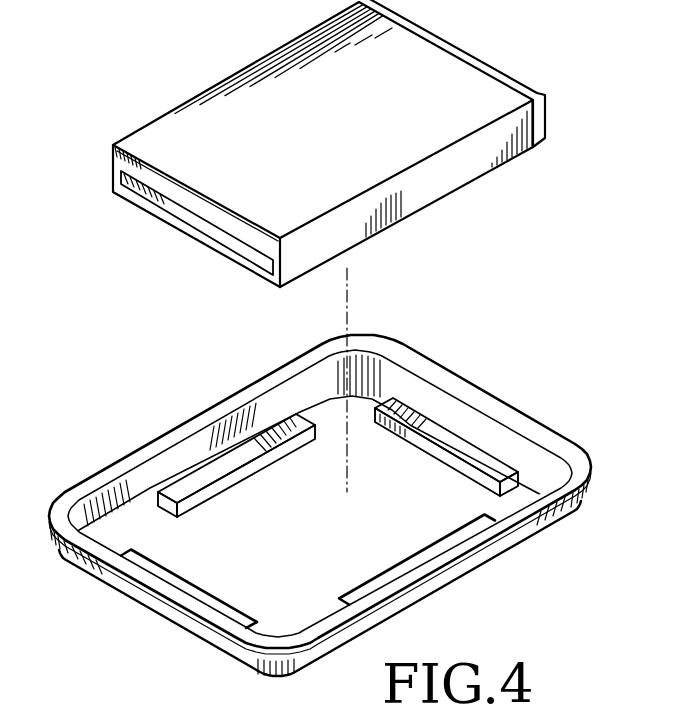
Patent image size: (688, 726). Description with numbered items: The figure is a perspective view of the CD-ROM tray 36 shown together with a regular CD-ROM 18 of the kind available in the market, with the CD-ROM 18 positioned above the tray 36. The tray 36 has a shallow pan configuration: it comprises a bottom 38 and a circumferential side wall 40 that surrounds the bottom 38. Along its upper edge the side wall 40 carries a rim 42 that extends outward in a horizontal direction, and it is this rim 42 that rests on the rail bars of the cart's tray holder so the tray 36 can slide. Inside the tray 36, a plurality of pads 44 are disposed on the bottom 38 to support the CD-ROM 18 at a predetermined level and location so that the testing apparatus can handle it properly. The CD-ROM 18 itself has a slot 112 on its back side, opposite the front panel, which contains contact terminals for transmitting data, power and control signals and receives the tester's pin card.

The CD-ROM 18 is at (322, 143).
The slot 112 is at (197, 223).
The CD-ROM tray 36 is at (337, 498).
The rim 42 is at (548, 442).
The bottom 38 is at (175, 548).
The side wall 40 is at (380, 378).
The pads 44 is at (217, 470).